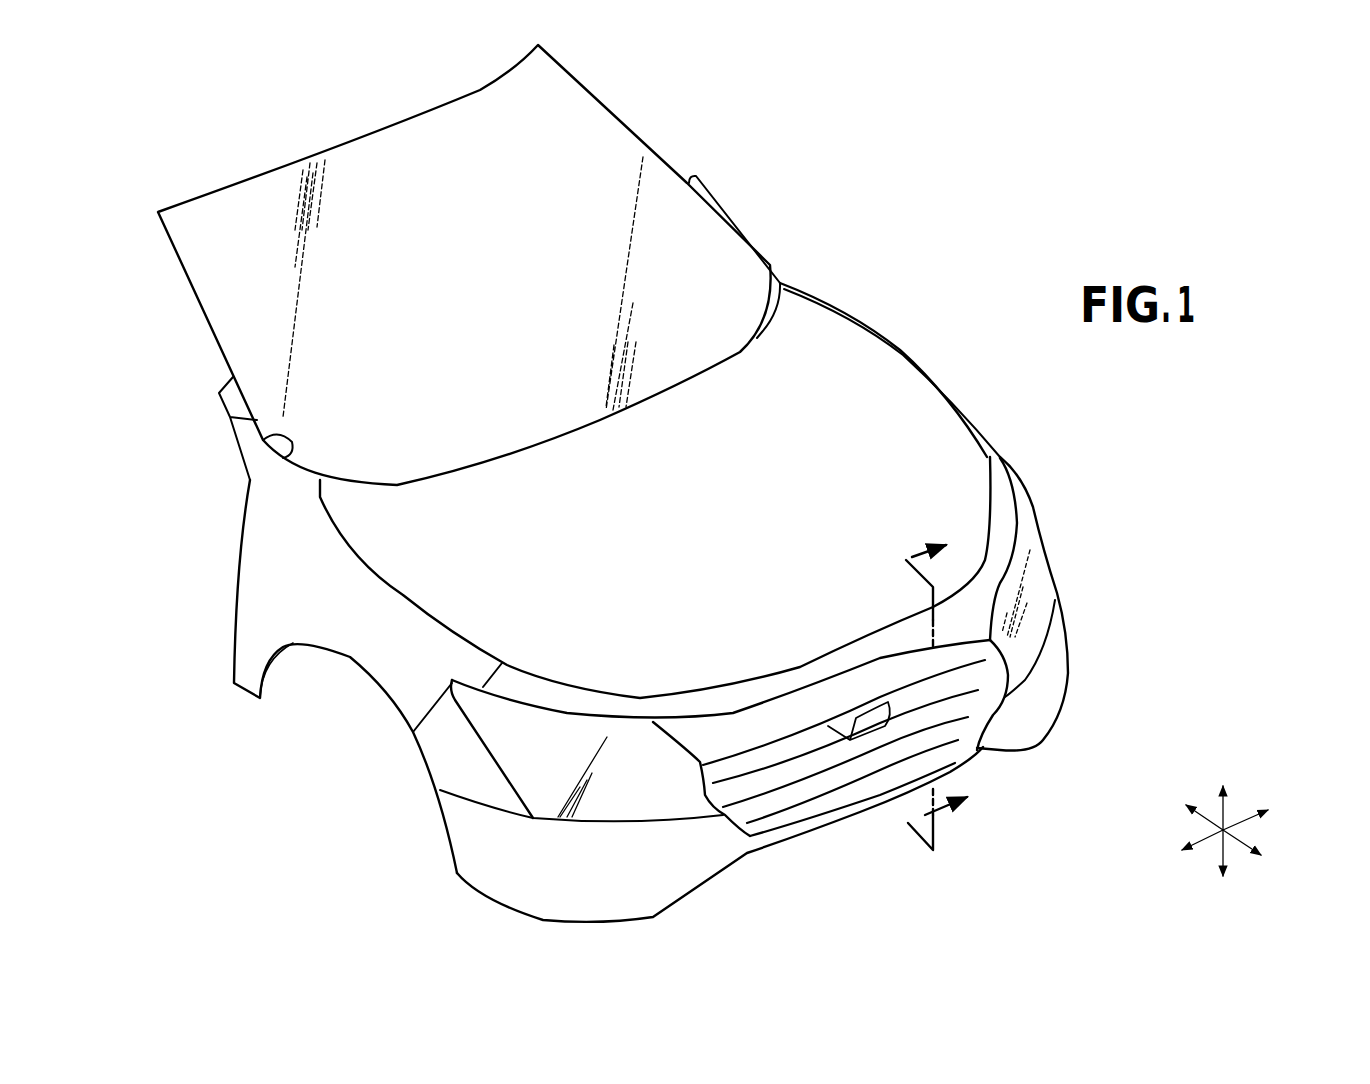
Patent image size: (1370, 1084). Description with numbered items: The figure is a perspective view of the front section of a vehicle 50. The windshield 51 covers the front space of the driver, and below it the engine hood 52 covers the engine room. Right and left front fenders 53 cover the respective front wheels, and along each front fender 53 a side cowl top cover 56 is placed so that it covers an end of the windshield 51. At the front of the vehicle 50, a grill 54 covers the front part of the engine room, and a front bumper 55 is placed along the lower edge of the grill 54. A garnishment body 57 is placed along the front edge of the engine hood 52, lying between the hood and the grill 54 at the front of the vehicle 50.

The vehicle 50 is at (944, 174).
The windshield 51 is at (602, 160).
The engine hood 52 is at (865, 395).
The front fender 53 is at (982, 447).
The grill 54 is at (947, 707).
The front bumper 55 is at (507, 873).
The side cowl top cover 56 is at (770, 277).
The garnishment body 57 is at (757, 693).